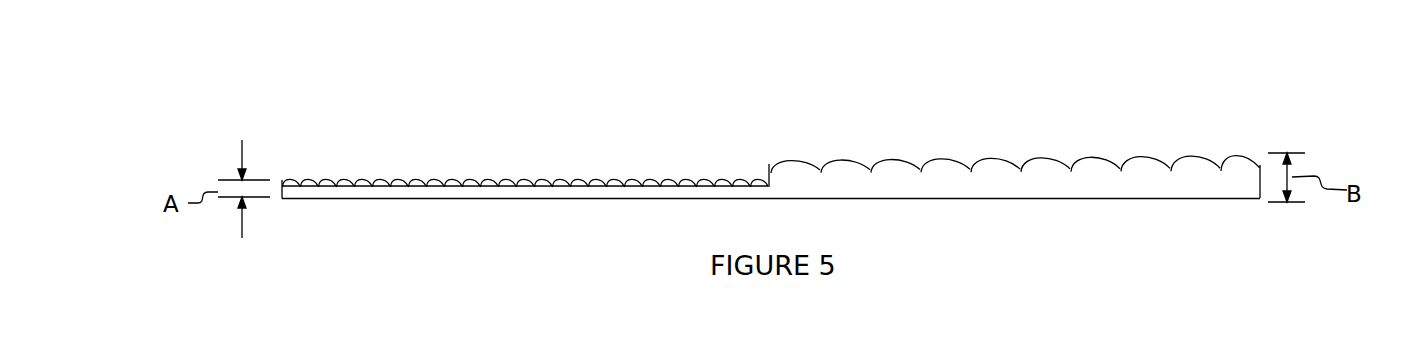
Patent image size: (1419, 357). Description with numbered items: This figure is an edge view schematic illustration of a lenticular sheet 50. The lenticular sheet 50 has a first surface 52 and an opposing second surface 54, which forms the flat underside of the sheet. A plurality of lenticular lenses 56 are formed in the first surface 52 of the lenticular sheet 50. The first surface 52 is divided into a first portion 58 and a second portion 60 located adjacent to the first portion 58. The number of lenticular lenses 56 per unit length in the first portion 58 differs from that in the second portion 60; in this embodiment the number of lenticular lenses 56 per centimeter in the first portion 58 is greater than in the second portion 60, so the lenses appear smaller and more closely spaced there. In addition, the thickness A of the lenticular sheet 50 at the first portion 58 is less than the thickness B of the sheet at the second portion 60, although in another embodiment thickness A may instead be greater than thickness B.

The lenticular sheet 50 is at (779, 197).
The first surface 52 is at (290, 160).
The second surface 54 is at (318, 200).
The lenticular lenses 56 is at (771, 212).
The first portion 58 is at (580, 212).
The second portion 60 is at (1102, 214).